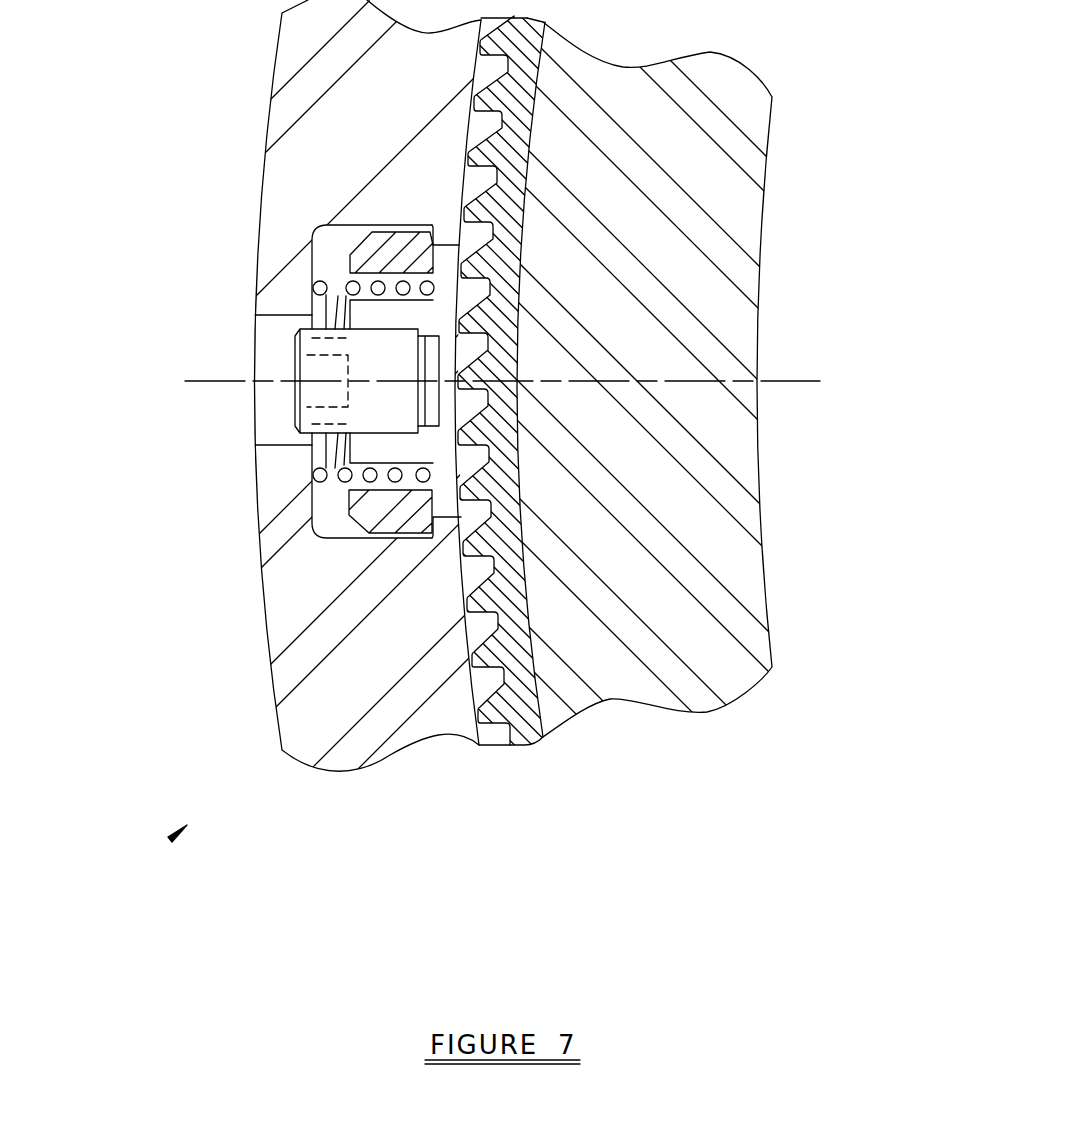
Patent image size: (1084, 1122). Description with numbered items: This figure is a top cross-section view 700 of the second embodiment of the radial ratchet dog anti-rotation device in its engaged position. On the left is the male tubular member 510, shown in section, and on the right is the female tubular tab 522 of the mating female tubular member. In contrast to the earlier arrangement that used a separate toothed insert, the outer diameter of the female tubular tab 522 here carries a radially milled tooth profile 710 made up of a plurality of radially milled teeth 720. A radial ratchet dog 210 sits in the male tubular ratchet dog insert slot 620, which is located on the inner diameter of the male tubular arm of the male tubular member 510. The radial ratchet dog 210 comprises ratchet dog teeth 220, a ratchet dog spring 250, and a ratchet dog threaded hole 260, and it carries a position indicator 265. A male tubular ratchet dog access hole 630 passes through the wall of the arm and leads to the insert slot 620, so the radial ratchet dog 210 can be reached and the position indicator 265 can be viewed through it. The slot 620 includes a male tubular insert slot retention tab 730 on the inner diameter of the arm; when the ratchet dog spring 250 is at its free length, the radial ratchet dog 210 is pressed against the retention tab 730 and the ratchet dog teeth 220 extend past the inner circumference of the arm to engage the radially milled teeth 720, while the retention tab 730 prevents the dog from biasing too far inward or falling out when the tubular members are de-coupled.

The male tubular member 510 is at (273, 84).
The female tubular tab 522 is at (765, 170).
The radially milled tooth profile 710 is at (527, 730).
The radially milled teeth 720 is at (480, 657).
The male tubular insert slot retention tab 730 is at (459, 514).
The male tubular ratchet dog insert slot 620 is at (345, 538).
The radial ratchet dog 210 is at (352, 252).
The ratchet dog teeth 220 is at (468, 455).
The ratchet dog spring 250 is at (342, 306).
The ratchet dog threaded hole 260 is at (299, 418).
The position indicator 265 is at (295, 383).
The male tubular ratchet dog access hole 630 is at (295, 384).
The top cross-section view 700 is at (183, 828).